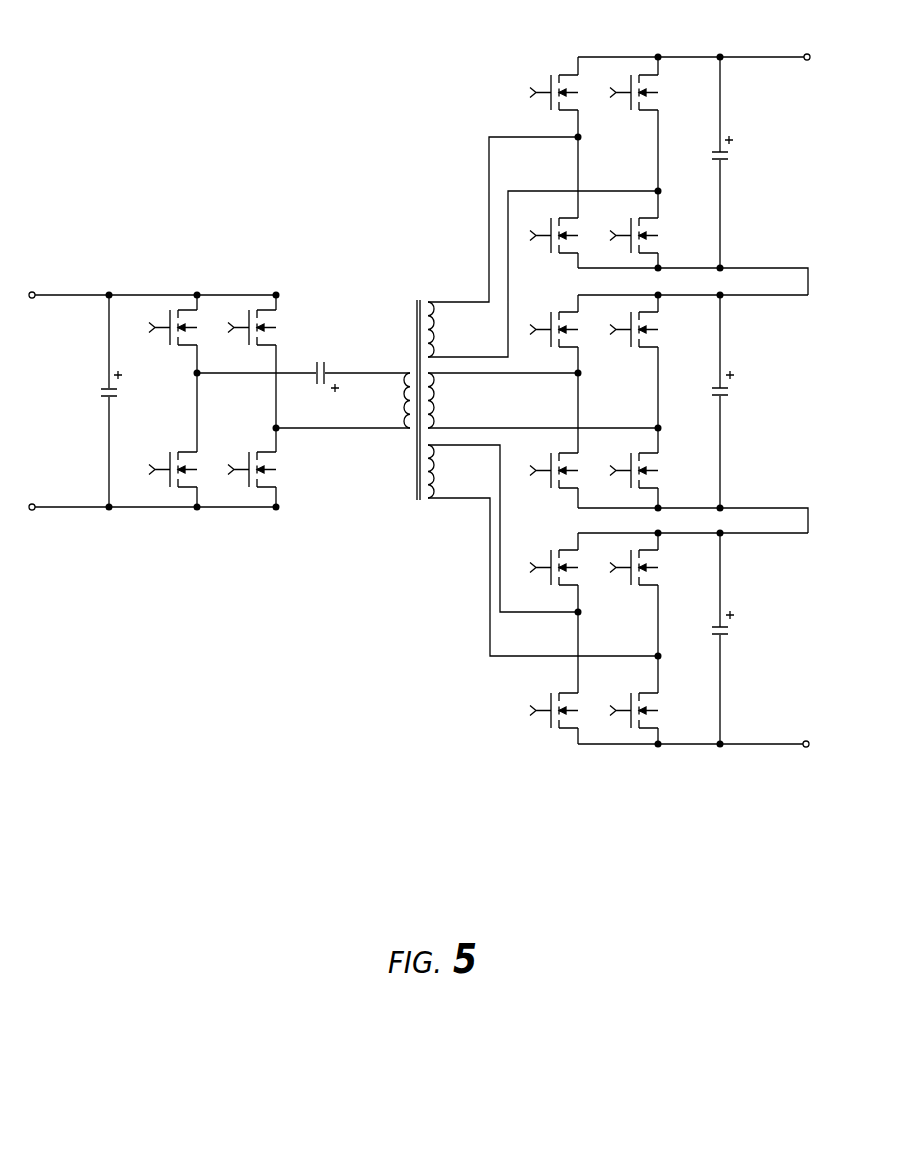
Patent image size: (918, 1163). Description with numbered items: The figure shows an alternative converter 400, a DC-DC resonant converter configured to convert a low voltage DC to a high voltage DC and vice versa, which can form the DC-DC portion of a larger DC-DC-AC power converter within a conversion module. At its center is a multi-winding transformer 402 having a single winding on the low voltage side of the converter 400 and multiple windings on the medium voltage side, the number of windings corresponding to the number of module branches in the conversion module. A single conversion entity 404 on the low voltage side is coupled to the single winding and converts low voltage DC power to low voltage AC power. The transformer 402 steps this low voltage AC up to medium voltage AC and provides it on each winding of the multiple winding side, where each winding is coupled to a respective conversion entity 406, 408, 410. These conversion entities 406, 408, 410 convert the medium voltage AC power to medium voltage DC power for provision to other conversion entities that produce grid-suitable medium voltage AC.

The converter 400 is at (419, 402).
The multi-winding transformer 402 is at (382, 290).
The conversion entity 404 is at (270, 281).
The conversion entity 406 is at (662, 44).
The conversion entity 408 is at (688, 352).
The conversion entity 410 is at (688, 598).